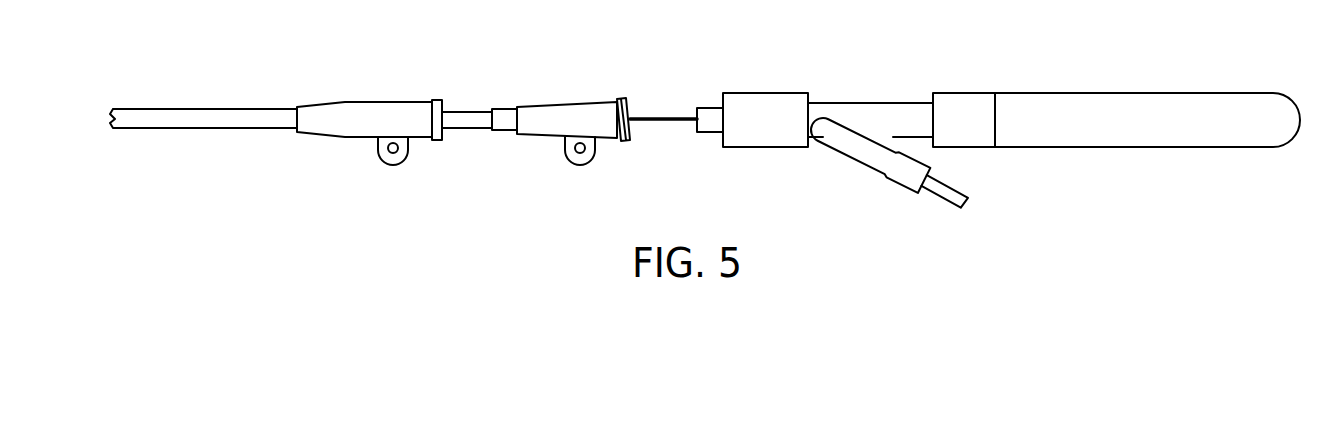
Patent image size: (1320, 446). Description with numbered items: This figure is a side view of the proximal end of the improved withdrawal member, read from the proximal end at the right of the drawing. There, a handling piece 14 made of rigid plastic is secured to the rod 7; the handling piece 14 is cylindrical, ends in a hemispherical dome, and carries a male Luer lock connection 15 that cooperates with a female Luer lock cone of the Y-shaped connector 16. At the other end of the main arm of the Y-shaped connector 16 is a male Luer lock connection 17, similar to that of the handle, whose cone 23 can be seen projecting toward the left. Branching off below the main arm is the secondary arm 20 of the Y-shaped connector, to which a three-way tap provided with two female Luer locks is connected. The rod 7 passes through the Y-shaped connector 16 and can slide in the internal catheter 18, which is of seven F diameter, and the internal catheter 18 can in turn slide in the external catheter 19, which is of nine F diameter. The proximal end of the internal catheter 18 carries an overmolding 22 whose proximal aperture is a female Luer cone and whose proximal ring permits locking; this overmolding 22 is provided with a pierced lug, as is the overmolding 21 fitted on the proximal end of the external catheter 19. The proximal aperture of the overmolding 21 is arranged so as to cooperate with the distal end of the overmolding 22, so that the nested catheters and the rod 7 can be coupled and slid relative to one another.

The rod 7 is at (652, 113).
The handling piece 14 is at (1124, 108).
The male Luer lock connection 15 is at (964, 110).
The Y-shaped connector 16 is at (882, 110).
The male Luer lock connection 17 is at (770, 110).
The internal catheter 18 is at (463, 113).
The external catheter 19 is at (196, 113).
The secondary arm 20 is at (885, 160).
The overmolding 21 is at (370, 115).
The overmolding 22 is at (563, 115).
The cone 23 is at (707, 108).